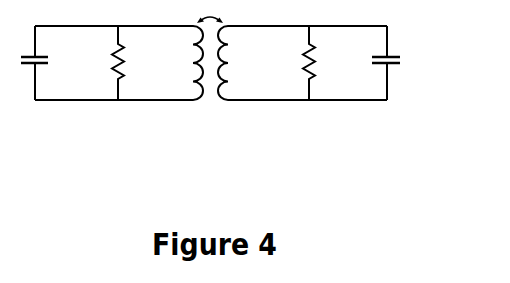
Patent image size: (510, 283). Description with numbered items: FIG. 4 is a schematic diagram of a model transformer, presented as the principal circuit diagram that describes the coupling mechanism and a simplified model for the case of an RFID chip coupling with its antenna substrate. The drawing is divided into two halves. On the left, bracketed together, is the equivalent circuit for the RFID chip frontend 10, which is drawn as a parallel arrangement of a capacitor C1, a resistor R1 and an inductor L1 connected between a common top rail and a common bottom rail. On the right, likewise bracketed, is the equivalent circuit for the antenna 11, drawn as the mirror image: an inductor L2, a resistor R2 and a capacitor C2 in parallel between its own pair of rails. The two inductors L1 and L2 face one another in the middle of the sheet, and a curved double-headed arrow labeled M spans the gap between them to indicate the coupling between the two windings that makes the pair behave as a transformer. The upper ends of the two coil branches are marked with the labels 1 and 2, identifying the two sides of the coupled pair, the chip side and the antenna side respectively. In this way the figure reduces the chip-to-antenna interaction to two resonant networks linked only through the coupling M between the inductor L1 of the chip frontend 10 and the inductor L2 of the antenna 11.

The equivalent circuit for RFID chip frontend 10 is at (111, 95).
The equivalent circuit for the antenna 11 is at (321, 95).
The first port 1 is at (172, 18).
The second port 2 is at (247, 18).
The mutual inductance M is at (210, 11).
The first capacitor C1 is at (46, 62).
The first resistor R1 is at (131, 63).
The first inductor L1 is at (187, 63).
The second inductor L2 is at (235, 63).
The second resistor R2 is at (322, 63).
The second capacitor C2 is at (398, 62).